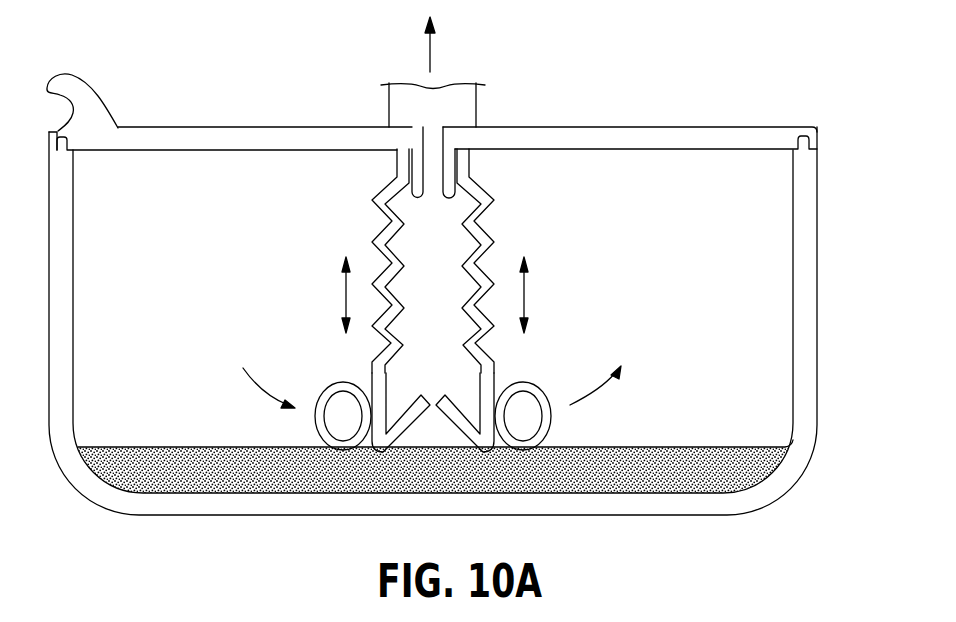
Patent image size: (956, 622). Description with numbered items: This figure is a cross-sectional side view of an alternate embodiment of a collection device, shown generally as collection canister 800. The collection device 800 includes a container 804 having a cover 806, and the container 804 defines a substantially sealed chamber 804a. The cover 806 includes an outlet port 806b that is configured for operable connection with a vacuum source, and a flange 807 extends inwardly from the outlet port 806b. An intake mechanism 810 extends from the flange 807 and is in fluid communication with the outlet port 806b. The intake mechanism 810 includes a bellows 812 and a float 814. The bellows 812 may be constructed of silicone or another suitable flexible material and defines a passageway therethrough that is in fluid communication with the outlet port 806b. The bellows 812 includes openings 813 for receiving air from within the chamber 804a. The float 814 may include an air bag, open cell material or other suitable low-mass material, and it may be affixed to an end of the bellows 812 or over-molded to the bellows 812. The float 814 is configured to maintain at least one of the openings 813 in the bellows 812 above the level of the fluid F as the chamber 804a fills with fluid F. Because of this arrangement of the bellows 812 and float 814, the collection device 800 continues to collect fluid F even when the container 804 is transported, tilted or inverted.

The collection canister 800 is at (737, 79).
The container 804 is at (790, 487).
The chamber 804a is at (792, 330).
The cover 806 is at (608, 126).
The outlet port 806b is at (442, 127).
The flange 807 is at (455, 173).
The intake mechanism 810 is at (540, 212).
The bellows 812 is at (484, 290).
The openings 813 is at (355, 380).
The float 814 is at (553, 436).
The fluid F is at (545, 488).